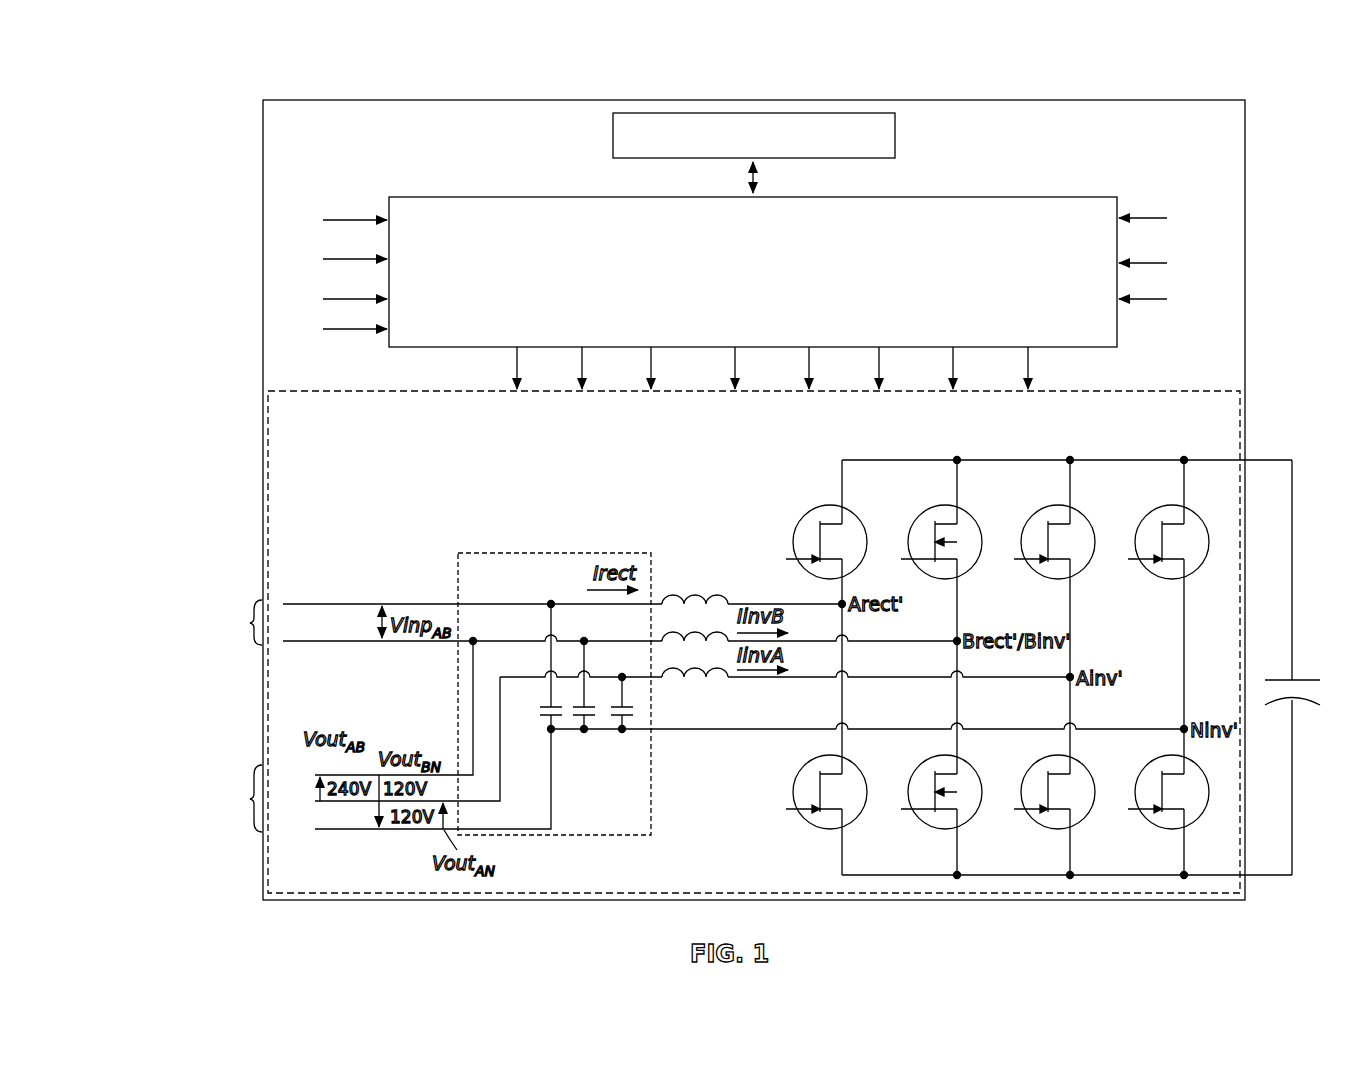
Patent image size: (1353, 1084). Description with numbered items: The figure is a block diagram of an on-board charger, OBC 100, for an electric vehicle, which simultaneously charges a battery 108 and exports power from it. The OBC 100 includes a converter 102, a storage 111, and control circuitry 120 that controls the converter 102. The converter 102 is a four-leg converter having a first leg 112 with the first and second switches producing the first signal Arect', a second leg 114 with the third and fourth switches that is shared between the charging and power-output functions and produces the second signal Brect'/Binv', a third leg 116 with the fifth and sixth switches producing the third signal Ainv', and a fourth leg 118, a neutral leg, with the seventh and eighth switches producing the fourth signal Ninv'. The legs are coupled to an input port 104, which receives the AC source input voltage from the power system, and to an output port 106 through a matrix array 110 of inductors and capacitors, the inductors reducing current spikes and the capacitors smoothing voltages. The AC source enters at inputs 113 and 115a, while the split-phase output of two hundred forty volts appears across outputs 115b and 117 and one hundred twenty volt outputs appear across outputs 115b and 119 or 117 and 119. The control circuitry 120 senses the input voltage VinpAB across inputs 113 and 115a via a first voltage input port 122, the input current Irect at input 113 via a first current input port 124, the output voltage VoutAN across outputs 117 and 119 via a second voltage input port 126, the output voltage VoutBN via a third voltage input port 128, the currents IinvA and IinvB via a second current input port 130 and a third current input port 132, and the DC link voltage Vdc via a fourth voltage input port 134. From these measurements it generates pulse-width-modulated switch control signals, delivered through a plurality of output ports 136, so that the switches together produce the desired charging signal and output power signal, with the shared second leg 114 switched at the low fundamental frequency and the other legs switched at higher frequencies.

The OBC 100 is at (277, 77).
The converter 102 is at (328, 391).
The input port 104 is at (173, 647).
The output port 106 is at (167, 842).
The battery 108 is at (1305, 652).
The matrix array 110 is at (545, 552).
The storage 111 is at (612, 135).
The first leg 112 is at (830, 455).
The input 113 is at (330, 592).
The second leg 114 is at (944, 455).
The input 115a is at (330, 628).
The output 115b is at (283, 744).
The third leg 116 is at (1057, 455).
The output 117 is at (275, 814).
The fourth leg 118 is at (1172, 455).
The output 119 is at (292, 842).
The control circuitry 120 is at (453, 197).
The first voltage input port 122 is at (470, 228).
The first current input port 124 is at (447, 261).
The second voltage input port 126 is at (470, 300).
The third voltage input port 128 is at (472, 334).
The second current input port 130 is at (1053, 225).
The third current input port 132 is at (1053, 262).
The fourth voltage input port 134 is at (1053, 299).
The output ports 136 is at (629, 300).